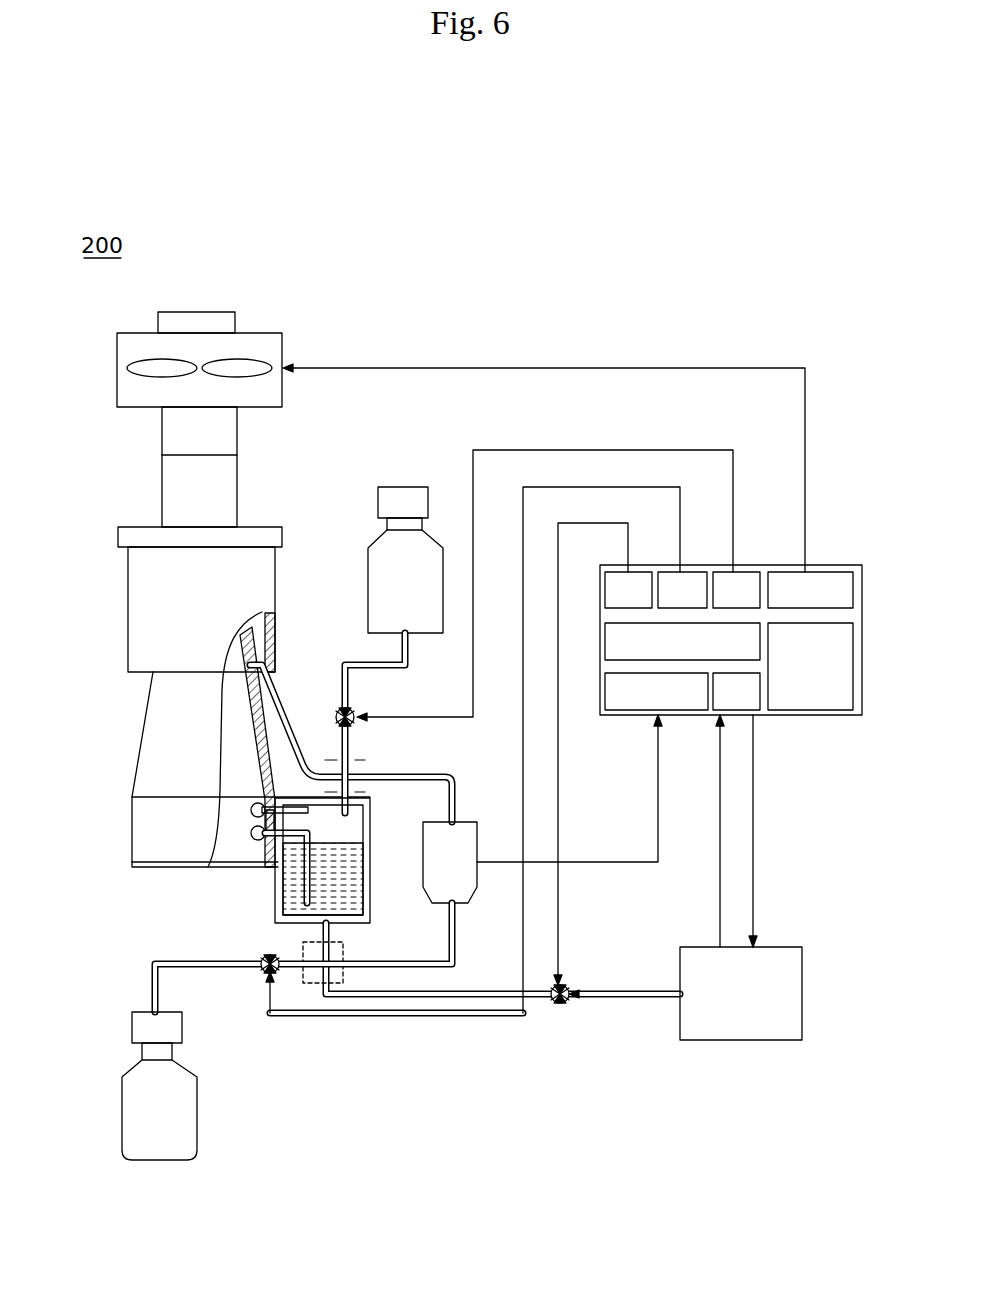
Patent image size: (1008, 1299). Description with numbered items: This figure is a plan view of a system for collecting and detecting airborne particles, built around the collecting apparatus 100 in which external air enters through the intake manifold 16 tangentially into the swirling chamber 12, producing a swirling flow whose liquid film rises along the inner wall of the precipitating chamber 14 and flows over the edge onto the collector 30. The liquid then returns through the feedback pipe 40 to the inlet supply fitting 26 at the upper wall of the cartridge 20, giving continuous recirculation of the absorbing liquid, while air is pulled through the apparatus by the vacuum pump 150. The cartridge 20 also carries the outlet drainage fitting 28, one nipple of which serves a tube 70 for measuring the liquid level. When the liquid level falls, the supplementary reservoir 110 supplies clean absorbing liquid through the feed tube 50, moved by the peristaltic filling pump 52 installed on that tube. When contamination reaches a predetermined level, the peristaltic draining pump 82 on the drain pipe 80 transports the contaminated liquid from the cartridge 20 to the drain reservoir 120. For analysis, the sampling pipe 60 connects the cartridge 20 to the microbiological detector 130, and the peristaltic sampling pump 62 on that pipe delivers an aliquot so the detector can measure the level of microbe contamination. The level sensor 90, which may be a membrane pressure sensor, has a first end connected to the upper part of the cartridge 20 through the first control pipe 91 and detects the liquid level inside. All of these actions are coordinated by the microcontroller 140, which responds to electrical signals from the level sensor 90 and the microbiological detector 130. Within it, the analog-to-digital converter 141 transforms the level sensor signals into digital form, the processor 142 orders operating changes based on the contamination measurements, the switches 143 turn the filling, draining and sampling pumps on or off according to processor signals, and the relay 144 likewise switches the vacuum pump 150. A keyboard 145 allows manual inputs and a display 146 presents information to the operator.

The collecting apparatus for airborne particles 100 is at (114, 502).
The vacuum pump 150 is at (262, 348).
The collector 30 is at (152, 617).
The precipitating chamber 14 is at (167, 750).
The swirling chamber 12 is at (150, 820).
The intake manifold 16 is at (240, 850).
The feedback pipe 40 is at (280, 707).
The inlet supply fitting 26 is at (373, 763).
The first control pipe 91 is at (445, 767).
The level sensor 90 is at (462, 833).
The supplementary reservoir 110 is at (387, 585).
The feed tube 50 is at (350, 640).
The peristaltic filling pump 52 is at (360, 710).
The cartridge 20 is at (375, 905).
The outlet drainage fitting 28 is at (343, 948).
The tube 70 is at (460, 948).
The drain pipe 80 is at (190, 958).
The peristaltic draining pump 82 is at (260, 977).
The drain reservoir 120 is at (180, 1125).
The peristaltic sampling pump 62 is at (568, 983).
The sampling pipe 60 is at (625, 1000).
The microbiological detector 130 is at (775, 955).
The microcontroller 140 is at (691, 717).
The analog-to-digital converter 141 is at (592, 767).
The processor 142 is at (736, 810).
The switches 143 is at (682, 590).
The relay 144 is at (810, 590).
The keyboard 145 is at (810, 666).
The display 146 is at (682, 641).